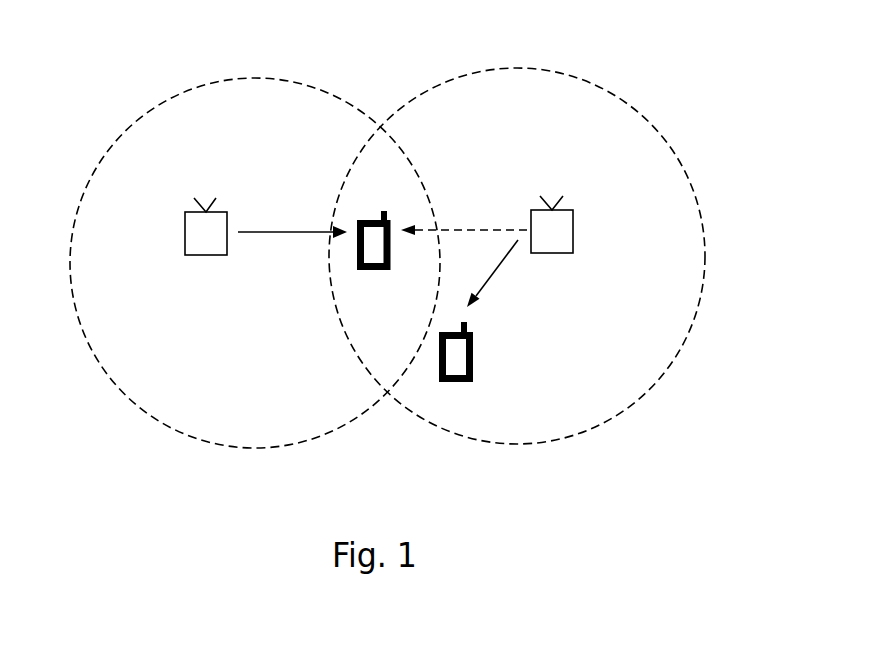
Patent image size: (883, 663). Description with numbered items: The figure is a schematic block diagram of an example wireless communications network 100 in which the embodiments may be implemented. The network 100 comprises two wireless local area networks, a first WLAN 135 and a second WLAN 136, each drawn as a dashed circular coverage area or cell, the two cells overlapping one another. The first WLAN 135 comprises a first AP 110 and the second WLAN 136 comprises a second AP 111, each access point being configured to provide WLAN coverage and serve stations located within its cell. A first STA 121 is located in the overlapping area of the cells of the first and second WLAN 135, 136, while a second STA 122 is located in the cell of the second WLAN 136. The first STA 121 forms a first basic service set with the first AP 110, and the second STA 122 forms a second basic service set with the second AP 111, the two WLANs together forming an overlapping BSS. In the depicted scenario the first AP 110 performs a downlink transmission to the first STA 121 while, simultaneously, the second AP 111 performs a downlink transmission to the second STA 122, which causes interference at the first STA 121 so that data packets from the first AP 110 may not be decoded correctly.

The wireless communications network 100 is at (700, 448).
The first AP 110 is at (207, 247).
The second AP 111 is at (552, 246).
The first STA 121 is at (375, 261).
The second STA 122 is at (456, 372).
The first WLAN 135 is at (258, 78).
The second WLAN 136 is at (467, 76).